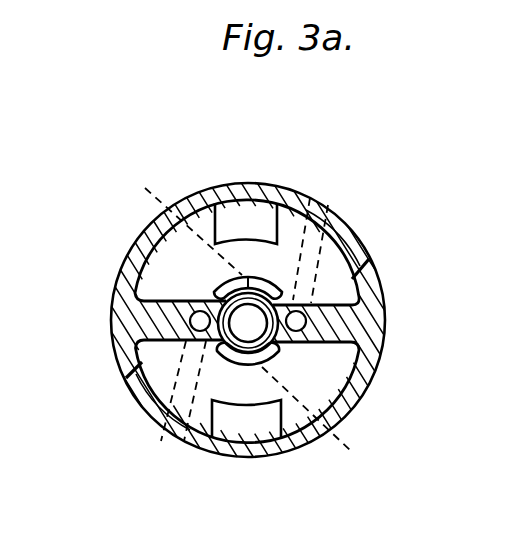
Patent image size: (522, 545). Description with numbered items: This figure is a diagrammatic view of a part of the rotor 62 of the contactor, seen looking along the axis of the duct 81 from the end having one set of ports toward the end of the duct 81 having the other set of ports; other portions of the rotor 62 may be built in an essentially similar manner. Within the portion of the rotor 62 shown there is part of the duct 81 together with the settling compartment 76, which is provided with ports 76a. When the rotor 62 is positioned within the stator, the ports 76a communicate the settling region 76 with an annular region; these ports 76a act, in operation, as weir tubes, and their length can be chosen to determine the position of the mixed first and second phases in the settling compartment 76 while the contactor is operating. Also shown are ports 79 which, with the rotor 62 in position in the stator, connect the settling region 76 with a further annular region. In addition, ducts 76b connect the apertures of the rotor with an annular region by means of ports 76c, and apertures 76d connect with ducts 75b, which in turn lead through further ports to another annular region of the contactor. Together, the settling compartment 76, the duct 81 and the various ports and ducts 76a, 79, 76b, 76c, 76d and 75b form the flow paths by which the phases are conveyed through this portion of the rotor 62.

The rotor 62 is at (199, 193).
The settling compartment 76 is at (160, 265).
The ports 76a is at (248, 218).
The ducts 76b is at (306, 320).
The ports 76c is at (332, 207).
The apertures 76d is at (218, 288).
The ducts 75b is at (250, 323).
The ports 79 is at (363, 270).
The duct 81 is at (236, 354).